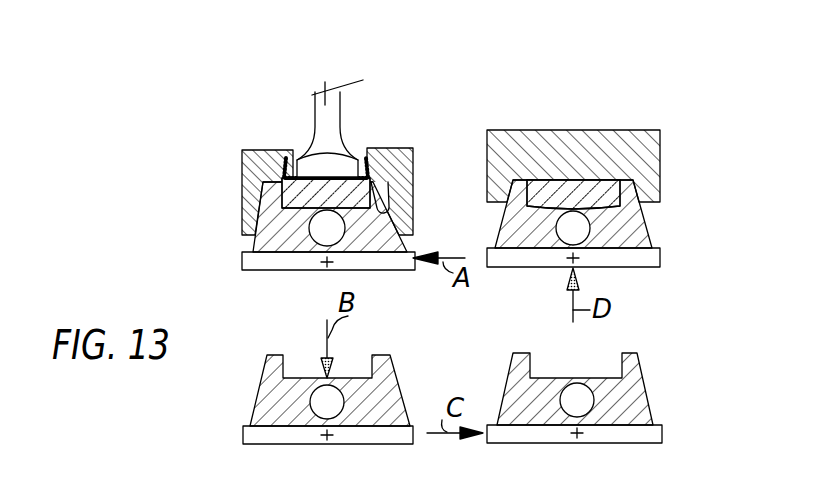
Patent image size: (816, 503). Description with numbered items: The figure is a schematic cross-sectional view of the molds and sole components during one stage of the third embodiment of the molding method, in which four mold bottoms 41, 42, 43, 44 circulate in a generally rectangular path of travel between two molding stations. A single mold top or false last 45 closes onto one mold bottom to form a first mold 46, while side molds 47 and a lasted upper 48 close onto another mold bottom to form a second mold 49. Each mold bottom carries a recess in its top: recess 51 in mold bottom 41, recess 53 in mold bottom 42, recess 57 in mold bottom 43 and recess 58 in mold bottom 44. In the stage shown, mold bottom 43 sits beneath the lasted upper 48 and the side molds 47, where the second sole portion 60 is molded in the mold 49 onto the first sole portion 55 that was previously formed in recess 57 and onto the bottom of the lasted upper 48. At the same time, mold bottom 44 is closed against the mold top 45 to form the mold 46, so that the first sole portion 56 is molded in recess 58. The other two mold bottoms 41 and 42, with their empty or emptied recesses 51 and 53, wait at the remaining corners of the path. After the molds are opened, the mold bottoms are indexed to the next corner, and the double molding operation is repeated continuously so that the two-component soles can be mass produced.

The mold bottom 41 is at (603, 433).
The mold bottom 42 is at (370, 433).
The mold bottom 43 is at (375, 262).
The mold bottom 44 is at (623, 257).
The mold top or false last 45 is at (487, 150).
The mold 46 is at (489, 219).
The side molds 47 is at (250, 188).
The lasted upper 48 is at (333, 122).
The mold 49 is at (288, 119).
The recess 51 is at (548, 378).
The recess 53 is at (300, 378).
The first sole portion 55 is at (253, 238).
The first sole portion 56 is at (578, 192).
The recess 57 is at (380, 220).
The recess 58 is at (623, 218).
The second sole portion 60 is at (367, 166).